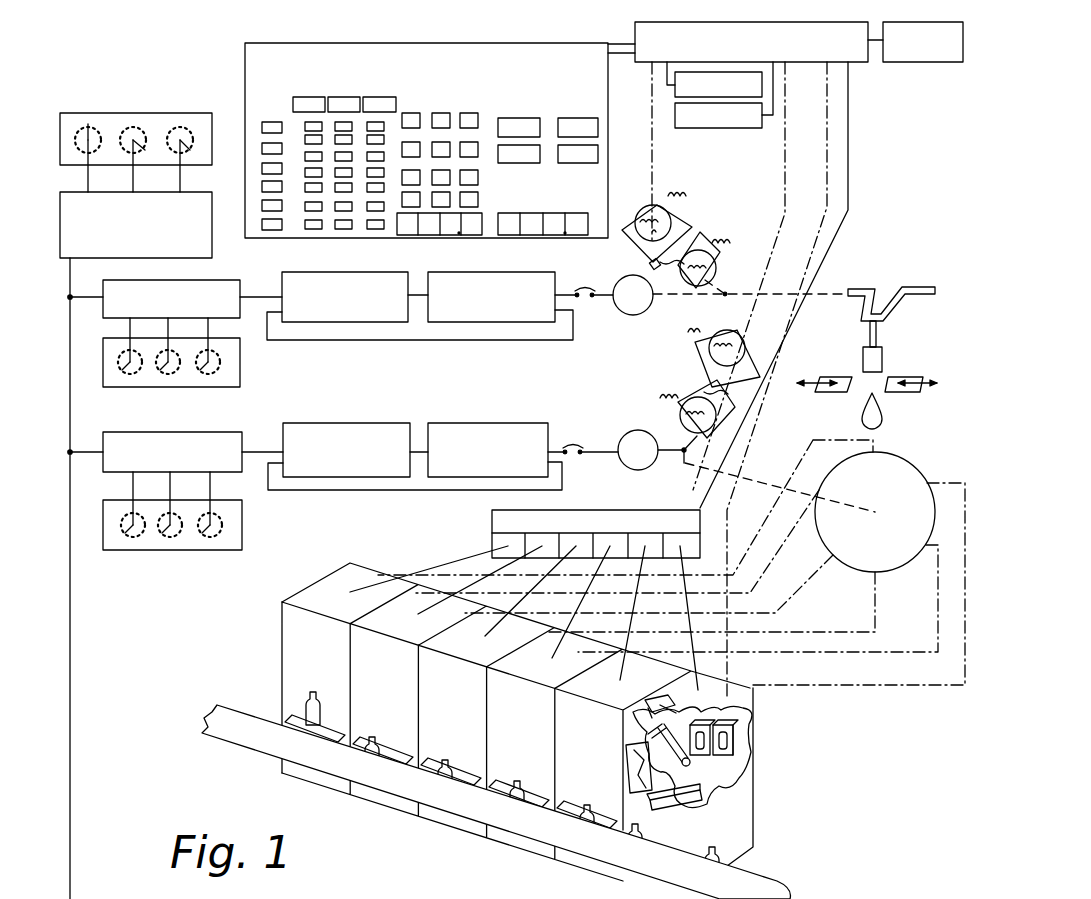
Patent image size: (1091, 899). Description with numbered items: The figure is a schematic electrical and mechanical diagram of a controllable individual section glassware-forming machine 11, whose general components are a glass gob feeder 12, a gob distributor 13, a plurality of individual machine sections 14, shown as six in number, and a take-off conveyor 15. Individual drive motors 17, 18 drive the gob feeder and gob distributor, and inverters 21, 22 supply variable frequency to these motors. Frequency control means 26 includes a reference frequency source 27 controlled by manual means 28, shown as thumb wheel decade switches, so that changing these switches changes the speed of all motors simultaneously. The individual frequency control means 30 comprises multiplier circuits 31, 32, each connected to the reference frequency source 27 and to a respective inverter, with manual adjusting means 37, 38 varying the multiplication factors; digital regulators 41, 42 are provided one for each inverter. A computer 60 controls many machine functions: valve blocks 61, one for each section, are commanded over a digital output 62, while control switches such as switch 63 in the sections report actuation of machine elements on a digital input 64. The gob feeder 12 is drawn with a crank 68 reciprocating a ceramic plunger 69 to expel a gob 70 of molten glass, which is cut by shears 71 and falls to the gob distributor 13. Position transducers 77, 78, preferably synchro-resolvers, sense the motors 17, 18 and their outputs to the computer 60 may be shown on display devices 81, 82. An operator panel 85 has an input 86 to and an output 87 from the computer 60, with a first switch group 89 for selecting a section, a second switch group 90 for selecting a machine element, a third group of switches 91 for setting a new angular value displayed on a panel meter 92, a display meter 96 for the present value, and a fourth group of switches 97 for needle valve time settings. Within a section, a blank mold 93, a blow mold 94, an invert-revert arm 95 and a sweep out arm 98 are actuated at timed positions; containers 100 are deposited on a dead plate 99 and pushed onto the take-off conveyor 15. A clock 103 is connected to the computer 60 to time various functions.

The glassware-forming machine 11 is at (505, 706).
The glass gob feeder 12 is at (902, 366).
The gob distributor 13 is at (918, 456).
The individual machine sections 14 is at (272, 630).
The take-off conveyor 15 is at (236, 740).
The drive motor 17 is at (630, 316).
The drive motor 18 is at (640, 430).
The inverter 21 is at (530, 273).
The inverter 22 is at (527, 423).
The frequency control means 26 is at (56, 186).
The reference frequency source 27 is at (205, 192).
The manual means 28 is at (124, 113).
The individual frequency control means 30 is at (139, 415).
The multiplier circuit 31 is at (214, 281).
The multiplier circuit 32 is at (216, 432).
The manual adjusting means 37 is at (240, 372).
The manual adjusting means 38 is at (226, 550).
The digital regulator 41 is at (386, 273).
The digital regulator 42 is at (392, 424).
The computer 60 is at (860, 62).
The valve blocks 61 is at (496, 511).
The digital output 62 is at (828, 170).
The control switch 63 is at (652, 702).
The digital input 64 is at (848, 130).
The crank 68 is at (878, 318).
The ceramic plunger 69 is at (883, 355).
The gob 70 is at (882, 412).
The shears 71 is at (846, 375).
The position transducer 77 is at (697, 232).
The position transducer 78 is at (695, 396).
The display device 81 is at (762, 87).
The display device 82 is at (773, 108).
The operator panel 85 is at (522, 54).
The input 86 is at (620, 43).
The output 87 is at (622, 57).
The first switch group 89 is at (268, 70).
The second switch group 90 is at (310, 62).
The third group of switches 91 is at (432, 72).
The panel meter 92 is at (468, 236).
The blank mold 93 is at (744, 727).
The blow mold 94 is at (640, 760).
The invert-revert arm 95 is at (700, 803).
The display meter 96 is at (566, 235).
The fourth group of switches 97 is at (545, 118).
The sweep out arm 98 is at (690, 824).
The dead plate 99 is at (328, 727).
The glassware containers 100 is at (305, 700).
The clock 103 is at (899, 31).